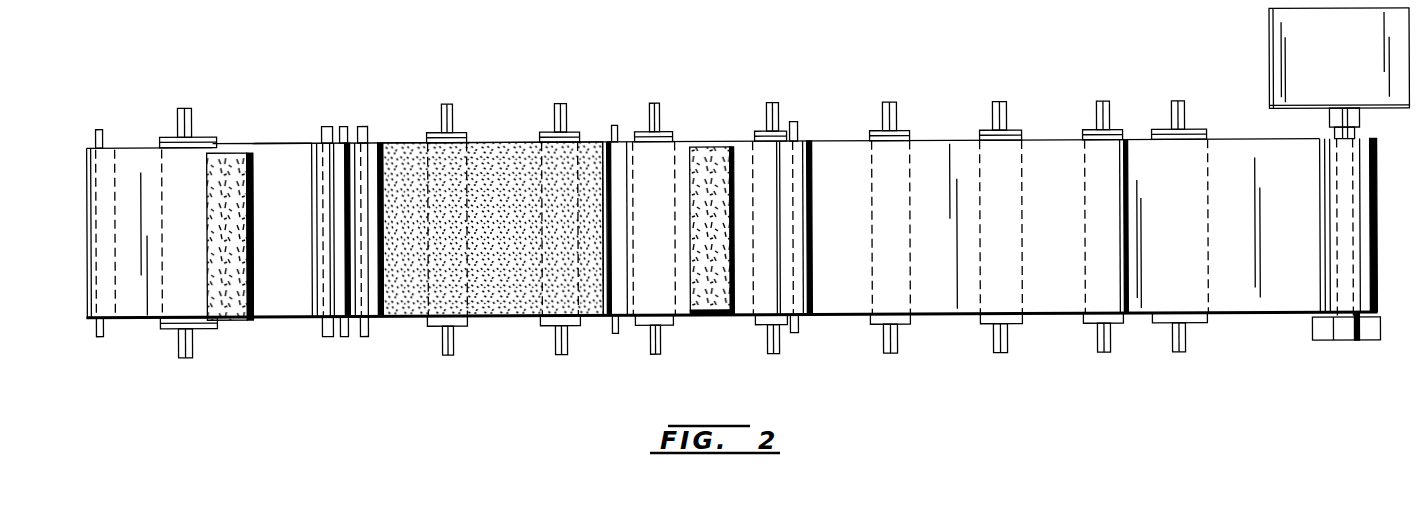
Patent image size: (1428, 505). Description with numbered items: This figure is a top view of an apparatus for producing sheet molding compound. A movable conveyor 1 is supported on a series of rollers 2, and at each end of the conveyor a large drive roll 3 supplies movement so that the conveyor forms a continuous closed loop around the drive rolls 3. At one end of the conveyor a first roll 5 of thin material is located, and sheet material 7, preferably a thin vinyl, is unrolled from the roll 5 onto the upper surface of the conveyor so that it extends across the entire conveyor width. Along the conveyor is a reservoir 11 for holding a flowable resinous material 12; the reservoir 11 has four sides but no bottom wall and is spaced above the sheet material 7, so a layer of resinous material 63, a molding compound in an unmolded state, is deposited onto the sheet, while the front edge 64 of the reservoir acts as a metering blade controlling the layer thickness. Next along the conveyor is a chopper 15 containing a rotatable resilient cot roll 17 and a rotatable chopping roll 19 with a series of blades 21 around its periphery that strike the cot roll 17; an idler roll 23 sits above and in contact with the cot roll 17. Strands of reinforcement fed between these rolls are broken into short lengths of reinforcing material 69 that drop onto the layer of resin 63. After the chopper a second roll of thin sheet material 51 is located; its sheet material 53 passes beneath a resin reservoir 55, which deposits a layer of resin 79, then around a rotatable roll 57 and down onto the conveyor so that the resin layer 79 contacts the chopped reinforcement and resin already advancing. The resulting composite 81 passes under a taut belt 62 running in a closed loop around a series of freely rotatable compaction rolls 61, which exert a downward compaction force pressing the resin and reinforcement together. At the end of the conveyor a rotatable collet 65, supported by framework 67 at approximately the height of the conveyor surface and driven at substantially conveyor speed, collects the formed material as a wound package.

The movable conveyor 1 is at (258, 141).
The rollers 2 is at (460, 330).
The drive roll 3 is at (170, 135).
The first roll of thin material 5 is at (89, 146).
The sheet material 7 is at (142, 300).
The reservoir 11 is at (243, 151).
The flowable resinous material 12 is at (229, 320).
The chopper 15 is at (348, 208).
The cot roll 17 is at (317, 141).
The chopping roll 19 is at (375, 148).
The blades 21 is at (378, 300).
The idler roll 23 is at (348, 140).
The second roll of thin sheet material 51 is at (812, 155).
The sheet material 53 is at (747, 292).
The resin reservoir 55 is at (738, 170).
The rotatable roll 57 is at (600, 141).
The compaction rolls 61 is at (1013, 131).
The belt 62 is at (950, 292).
The layer of resinous material 63 is at (291, 290).
The front edge 64 is at (252, 290).
The collet 65 is at (1365, 140).
The framework 67 is at (1264, 26).
The short lengths of reinforcing material 69 is at (483, 168).
The layer of resin 79 is at (663, 278).
The composite 81 is at (1228, 280).